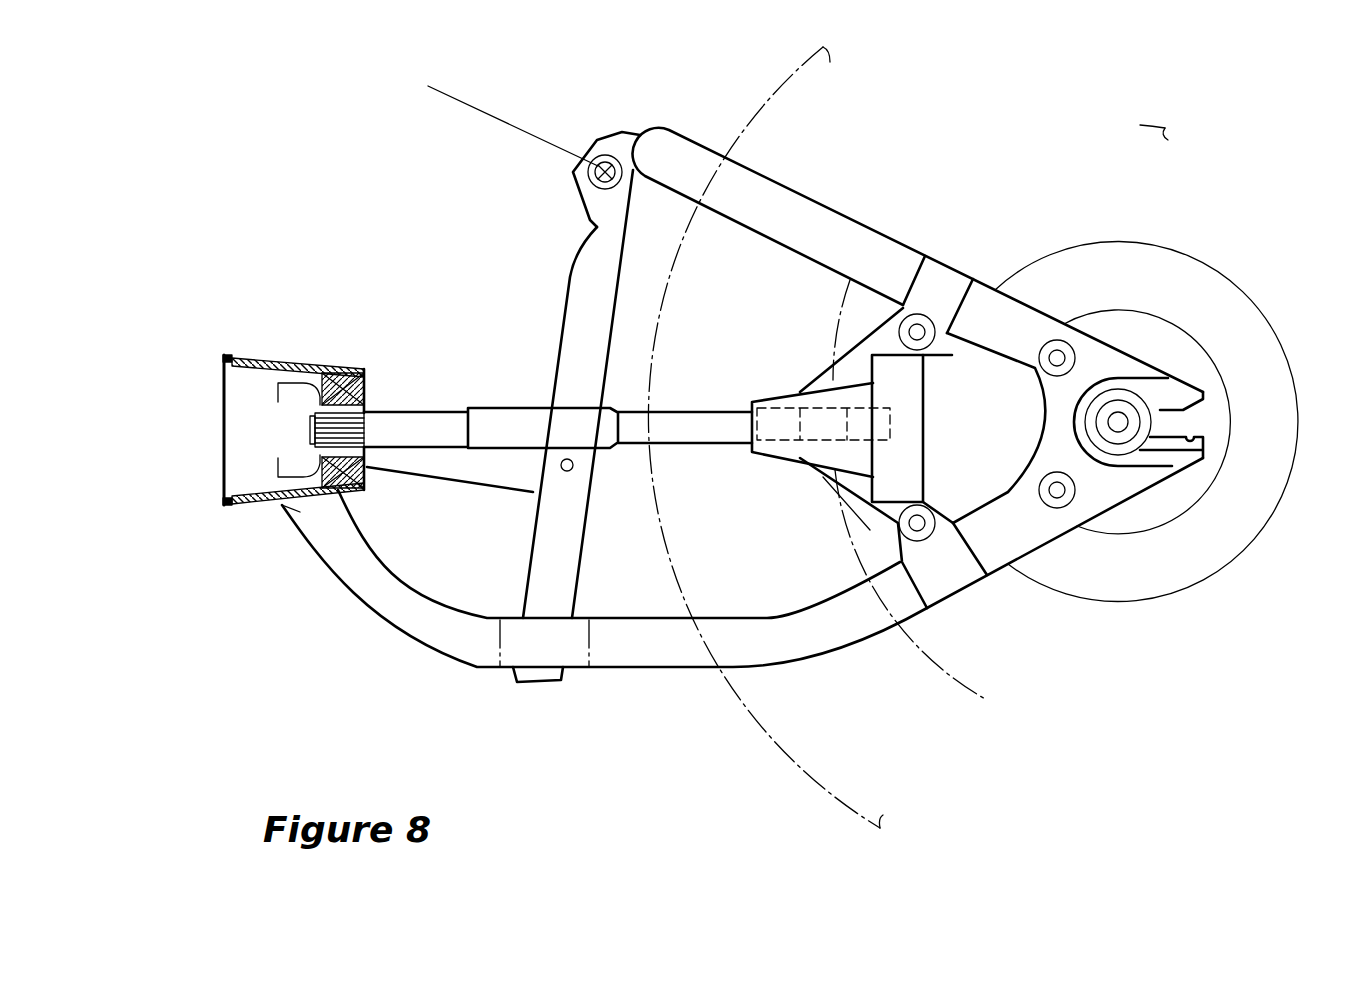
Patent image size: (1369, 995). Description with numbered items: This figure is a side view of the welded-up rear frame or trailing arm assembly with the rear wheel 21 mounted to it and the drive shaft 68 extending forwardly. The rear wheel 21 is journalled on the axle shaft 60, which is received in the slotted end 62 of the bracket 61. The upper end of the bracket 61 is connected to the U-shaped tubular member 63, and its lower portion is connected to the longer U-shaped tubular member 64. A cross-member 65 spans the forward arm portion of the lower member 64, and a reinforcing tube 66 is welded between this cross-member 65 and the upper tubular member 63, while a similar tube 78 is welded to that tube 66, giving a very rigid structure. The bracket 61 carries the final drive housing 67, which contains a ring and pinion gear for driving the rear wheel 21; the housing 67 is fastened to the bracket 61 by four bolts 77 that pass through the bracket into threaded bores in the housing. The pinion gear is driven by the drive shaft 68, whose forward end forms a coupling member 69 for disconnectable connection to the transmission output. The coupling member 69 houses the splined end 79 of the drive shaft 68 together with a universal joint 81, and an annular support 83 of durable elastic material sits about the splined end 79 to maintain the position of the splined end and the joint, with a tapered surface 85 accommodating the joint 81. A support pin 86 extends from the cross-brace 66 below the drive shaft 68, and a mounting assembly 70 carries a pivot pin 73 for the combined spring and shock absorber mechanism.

The rear wheel 21 is at (783, 763).
The axle shaft 60 is at (1118, 425).
The bracket 61 is at (975, 525).
The slotted end 62 is at (1167, 413).
The U-shaped tubular member 63 is at (812, 212).
The longer U-shaped tubular member 64 is at (648, 648).
The cross-member 65 is at (500, 650).
The reinforcing tube 66 is at (578, 300).
The final drive housing 67 is at (783, 372).
The drive shaft 68 is at (445, 420).
The coupling member 69 is at (258, 352).
The mounting assembly 70 is at (612, 137).
The pivot pin 73 is at (588, 172).
The bolts 77 is at (1057, 345).
The tube 78 is at (513, 475).
The splined end 79 is at (310, 430).
The universal joint 81 is at (283, 507).
The annular support 83 is at (363, 470).
The tapered surface 85 is at (350, 375).
The support pin 86 is at (567, 472).